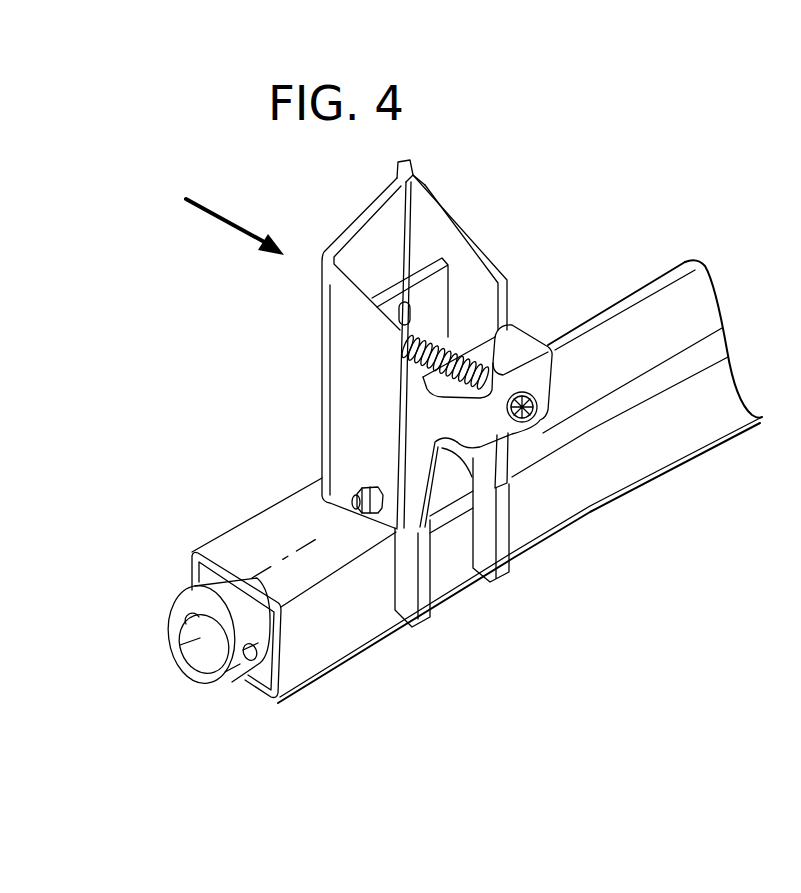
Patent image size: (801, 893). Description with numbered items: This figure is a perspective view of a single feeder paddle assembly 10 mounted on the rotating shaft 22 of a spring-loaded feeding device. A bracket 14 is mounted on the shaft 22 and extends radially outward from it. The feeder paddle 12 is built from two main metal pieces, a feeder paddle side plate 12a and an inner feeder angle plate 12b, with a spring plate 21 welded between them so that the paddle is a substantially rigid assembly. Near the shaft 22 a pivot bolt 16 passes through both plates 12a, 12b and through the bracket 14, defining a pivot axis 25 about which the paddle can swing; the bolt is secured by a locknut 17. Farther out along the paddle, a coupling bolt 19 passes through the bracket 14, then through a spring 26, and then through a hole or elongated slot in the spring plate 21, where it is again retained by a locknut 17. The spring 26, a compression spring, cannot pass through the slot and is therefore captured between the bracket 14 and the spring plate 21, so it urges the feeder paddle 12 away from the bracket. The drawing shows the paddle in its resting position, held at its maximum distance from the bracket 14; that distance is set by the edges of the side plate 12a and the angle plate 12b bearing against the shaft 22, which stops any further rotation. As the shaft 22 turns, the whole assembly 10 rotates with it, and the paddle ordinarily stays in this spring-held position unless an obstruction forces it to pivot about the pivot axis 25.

The feeder paddle assembly 10 is at (476, 415).
The feeder paddle 12 is at (418, 328).
The feeder paddle side plate 12a is at (505, 284).
The inner feeder angle plate 12b is at (322, 373).
The bracket 14 is at (526, 352).
The pivot bolt 16 is at (355, 512).
The locknut 17 is at (362, 514).
The coupling bolt 19 is at (540, 407).
The spring plate 21 is at (438, 285).
The shaft 22 is at (690, 290).
The pivot axis 25 is at (266, 546).
The spring 26 is at (430, 360).